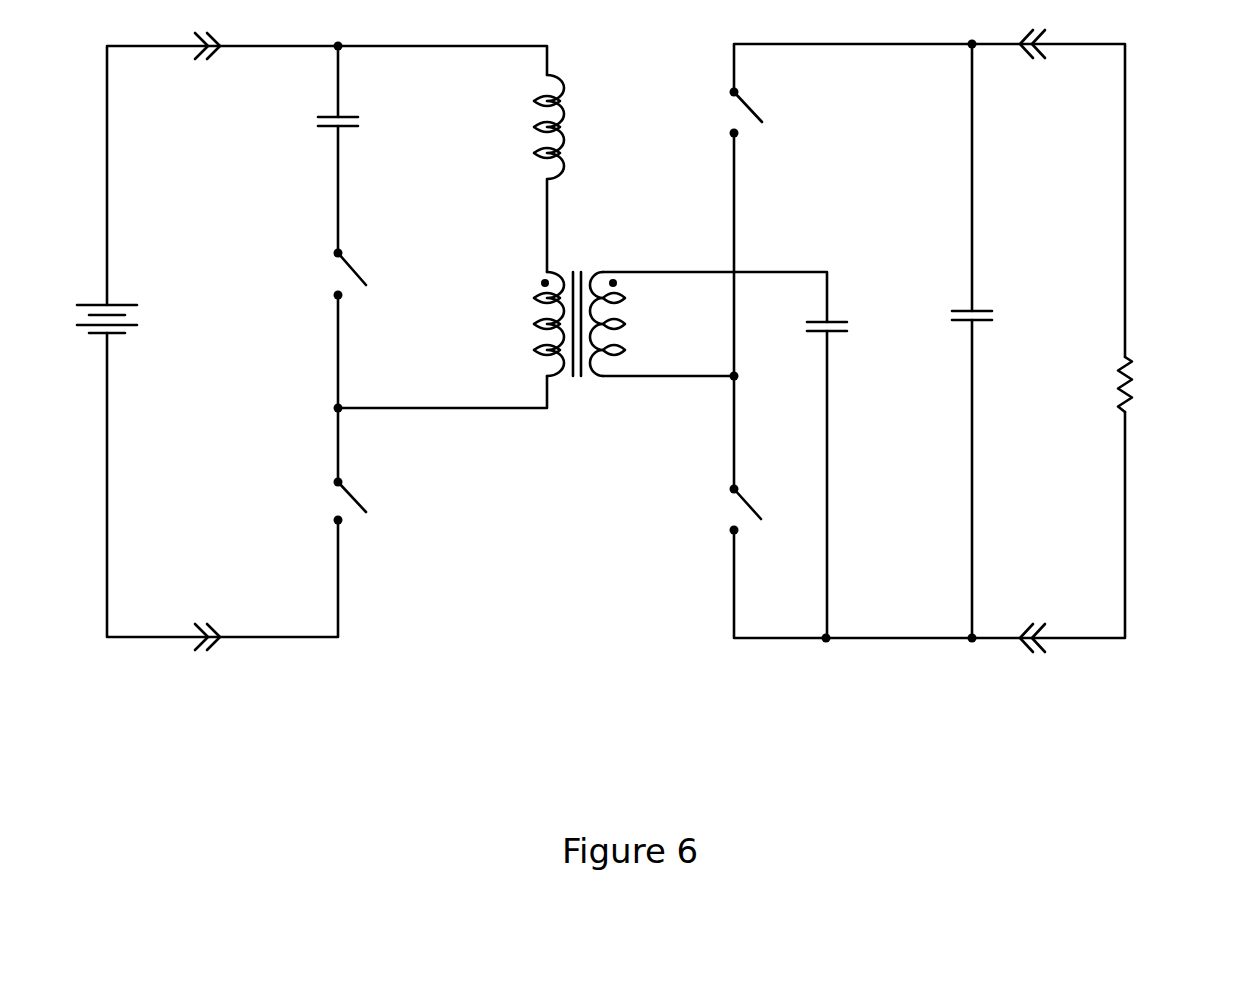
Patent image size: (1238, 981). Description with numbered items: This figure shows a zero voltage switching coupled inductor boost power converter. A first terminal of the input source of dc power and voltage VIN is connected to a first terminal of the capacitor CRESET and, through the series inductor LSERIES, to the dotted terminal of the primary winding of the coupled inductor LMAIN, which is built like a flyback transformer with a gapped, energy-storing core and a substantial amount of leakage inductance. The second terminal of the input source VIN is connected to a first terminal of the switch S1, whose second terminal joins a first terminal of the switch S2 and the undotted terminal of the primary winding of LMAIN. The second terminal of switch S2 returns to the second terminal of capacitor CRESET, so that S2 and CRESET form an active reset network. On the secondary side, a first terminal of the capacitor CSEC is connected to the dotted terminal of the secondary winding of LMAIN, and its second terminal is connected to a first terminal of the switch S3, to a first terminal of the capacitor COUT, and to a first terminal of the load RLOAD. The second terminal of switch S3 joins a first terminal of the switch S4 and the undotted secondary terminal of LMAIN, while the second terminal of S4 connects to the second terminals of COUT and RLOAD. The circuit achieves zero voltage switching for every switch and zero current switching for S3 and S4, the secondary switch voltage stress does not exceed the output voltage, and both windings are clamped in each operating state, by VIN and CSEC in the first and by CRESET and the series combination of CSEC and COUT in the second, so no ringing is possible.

The input source of dc power and voltage VIN is at (80, 321).
The capacitor CRESET is at (385, 124).
The switch S1 is at (329, 501).
The switch S2 is at (329, 274).
The switch S3 is at (730, 510).
The switch S4 is at (732, 113).
The series inductor LSERIES is at (598, 127).
The coupled inductor LMAIN is at (581, 302).
The capacitor CSEC is at (861, 328).
The capacitor COUT is at (1008, 318).
The load RLOAD is at (1168, 384).